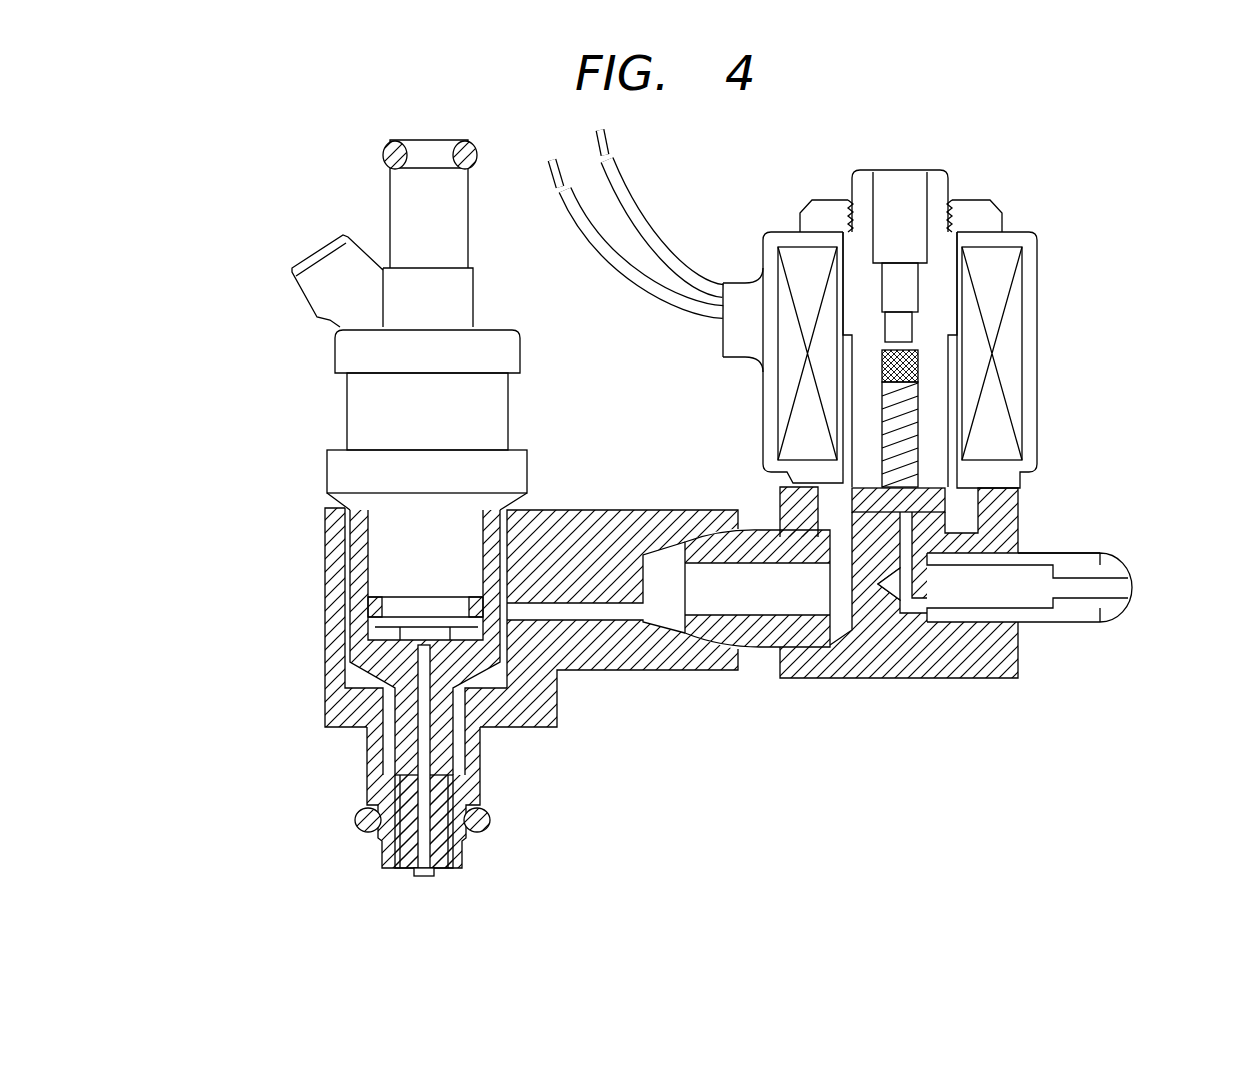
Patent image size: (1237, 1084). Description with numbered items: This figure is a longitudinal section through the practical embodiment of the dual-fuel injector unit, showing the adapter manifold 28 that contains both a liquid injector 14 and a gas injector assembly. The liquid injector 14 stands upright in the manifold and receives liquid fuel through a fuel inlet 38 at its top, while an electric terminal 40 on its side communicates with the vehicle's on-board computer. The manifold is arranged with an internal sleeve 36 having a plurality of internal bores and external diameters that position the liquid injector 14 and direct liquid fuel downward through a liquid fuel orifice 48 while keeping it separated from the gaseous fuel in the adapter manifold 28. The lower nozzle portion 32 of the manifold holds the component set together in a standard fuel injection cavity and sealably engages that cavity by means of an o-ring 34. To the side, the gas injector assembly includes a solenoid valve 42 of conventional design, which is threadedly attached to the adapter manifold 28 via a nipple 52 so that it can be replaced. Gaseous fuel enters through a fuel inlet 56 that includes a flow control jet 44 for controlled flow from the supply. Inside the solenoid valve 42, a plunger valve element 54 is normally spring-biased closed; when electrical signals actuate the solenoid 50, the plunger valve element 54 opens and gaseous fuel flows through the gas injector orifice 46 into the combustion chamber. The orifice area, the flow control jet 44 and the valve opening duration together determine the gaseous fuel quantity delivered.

The liquid injector 14 is at (327, 452).
The adapter manifold 28 is at (590, 510).
The nozzle portion 32 is at (367, 760).
The o-ring 34 is at (490, 820).
The internal sleeve 36 is at (368, 607).
The fuel inlet 38 is at (433, 140).
The electric terminal 40 is at (308, 256).
The solenoid valve 42 is at (958, 679).
The flow control jet 44 is at (1120, 553).
The gas injector orifice 46 is at (395, 868).
The liquid fuel orifice 48 is at (425, 876).
The solenoid 50 is at (1015, 232).
The nipple 52 is at (757, 650).
The plunger valve element 54 is at (917, 427).
The fuel inlet 56 is at (1048, 553).